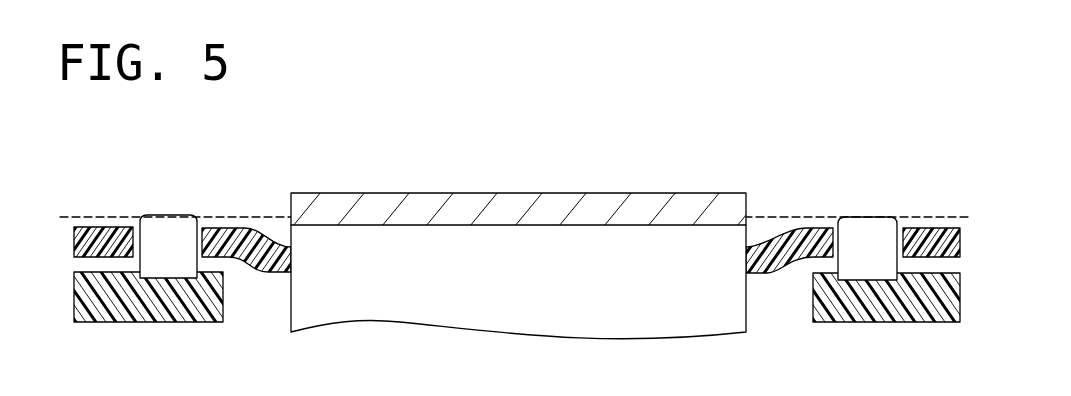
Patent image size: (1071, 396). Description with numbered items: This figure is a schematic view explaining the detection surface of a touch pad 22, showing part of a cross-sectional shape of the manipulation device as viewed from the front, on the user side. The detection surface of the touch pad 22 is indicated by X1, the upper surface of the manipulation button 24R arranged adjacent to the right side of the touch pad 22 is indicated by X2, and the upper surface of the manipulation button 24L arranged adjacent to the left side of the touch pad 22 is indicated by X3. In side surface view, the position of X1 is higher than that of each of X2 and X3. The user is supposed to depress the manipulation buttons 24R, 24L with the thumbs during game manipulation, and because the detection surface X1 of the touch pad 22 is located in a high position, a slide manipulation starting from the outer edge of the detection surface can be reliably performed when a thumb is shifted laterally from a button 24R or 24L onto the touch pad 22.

The detection surface of the touch pad X1 is at (528, 228).
The touch pad 22 is at (505, 198).
The upper surface of the manipulation button 24R X2 is at (864, 214).
The upper surface of the manipulation button 24L X3 is at (156, 212).
The manipulation button 24L is at (173, 228).
The manipulation button 24R is at (877, 228).